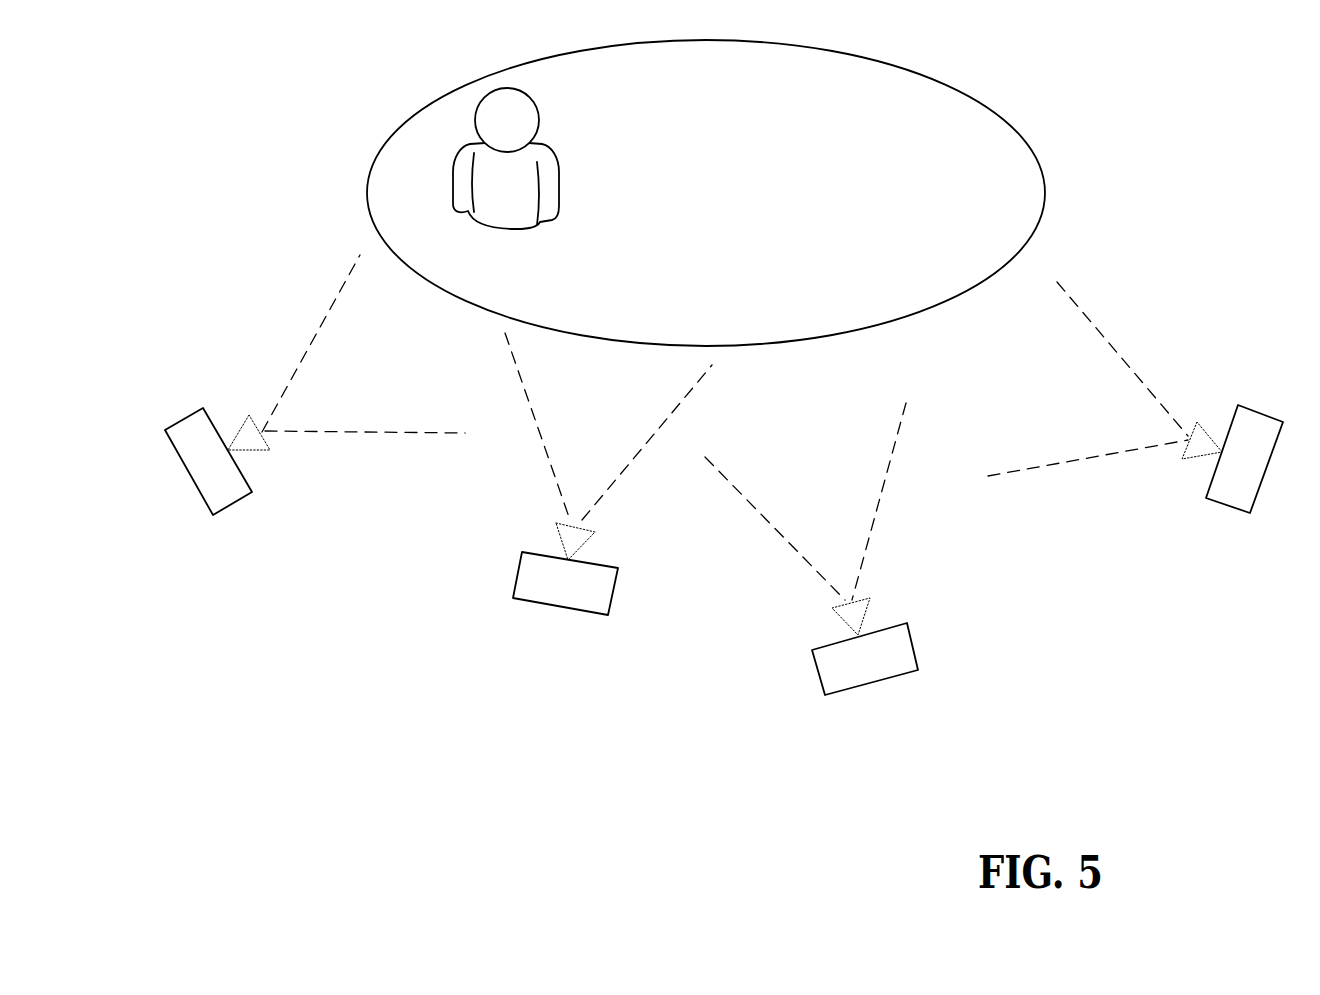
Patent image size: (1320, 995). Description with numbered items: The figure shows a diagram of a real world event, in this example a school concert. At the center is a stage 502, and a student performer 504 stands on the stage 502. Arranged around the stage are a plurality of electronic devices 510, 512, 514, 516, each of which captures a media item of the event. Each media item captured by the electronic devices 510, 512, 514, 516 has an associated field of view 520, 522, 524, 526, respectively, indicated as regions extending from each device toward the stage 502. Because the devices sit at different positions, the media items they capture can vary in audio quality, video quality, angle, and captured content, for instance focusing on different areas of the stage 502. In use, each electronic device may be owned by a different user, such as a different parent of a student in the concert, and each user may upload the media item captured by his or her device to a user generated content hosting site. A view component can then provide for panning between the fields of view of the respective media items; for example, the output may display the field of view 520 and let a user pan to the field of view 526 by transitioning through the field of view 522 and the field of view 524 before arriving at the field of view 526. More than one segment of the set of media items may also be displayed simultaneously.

The stage 502 is at (381, 152).
The student performer 504 is at (535, 108).
The electronic device 510 is at (190, 412).
The electronic device 512 is at (518, 562).
The electronic device 514 is at (826, 648).
The electronic device 516 is at (1227, 505).
The field of view 520 is at (366, 364).
The field of view 522 is at (601, 392).
The field of view 524 is at (788, 447).
The field of view 526 is at (1060, 374).